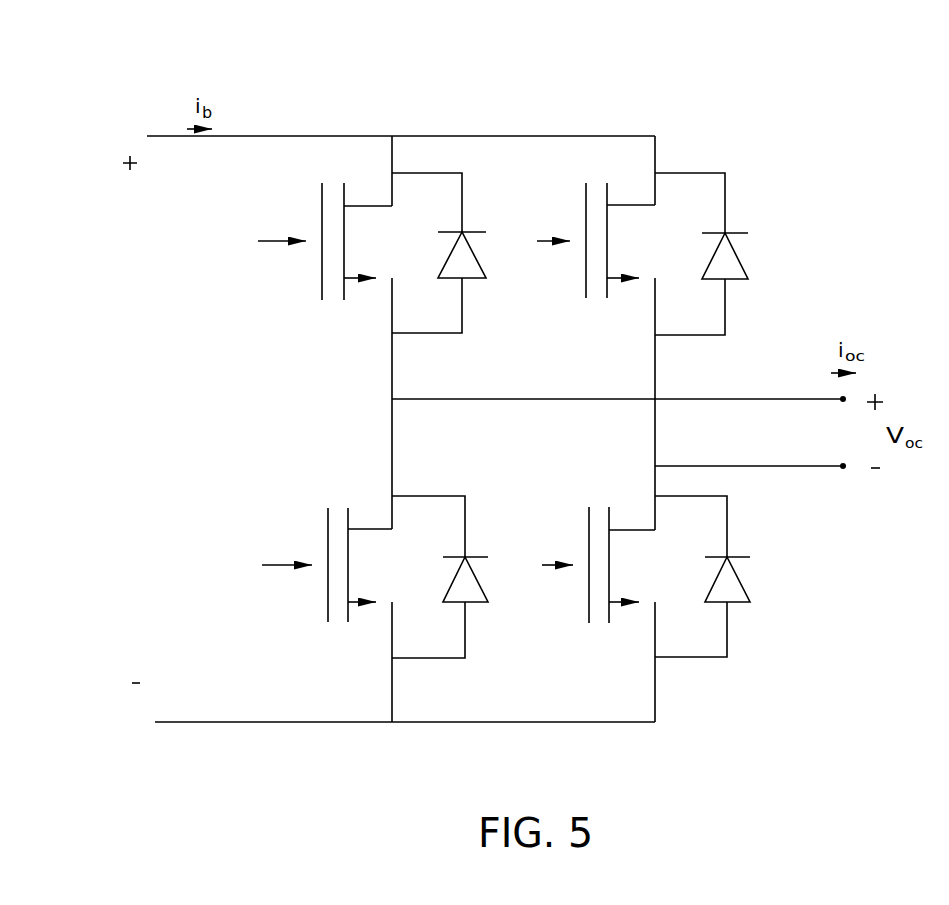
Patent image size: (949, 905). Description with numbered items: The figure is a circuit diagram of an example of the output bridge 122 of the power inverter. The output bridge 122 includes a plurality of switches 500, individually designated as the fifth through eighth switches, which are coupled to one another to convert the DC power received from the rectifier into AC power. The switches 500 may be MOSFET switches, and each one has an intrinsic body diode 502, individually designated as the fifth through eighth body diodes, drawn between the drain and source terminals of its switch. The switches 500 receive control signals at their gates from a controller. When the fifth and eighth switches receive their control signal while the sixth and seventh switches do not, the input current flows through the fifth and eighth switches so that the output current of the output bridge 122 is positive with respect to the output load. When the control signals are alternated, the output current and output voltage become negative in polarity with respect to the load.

The output bridge 122 is at (547, 127).
The switches 500 is at (293, 292).
The intrinsic body diode 502 is at (471, 280).